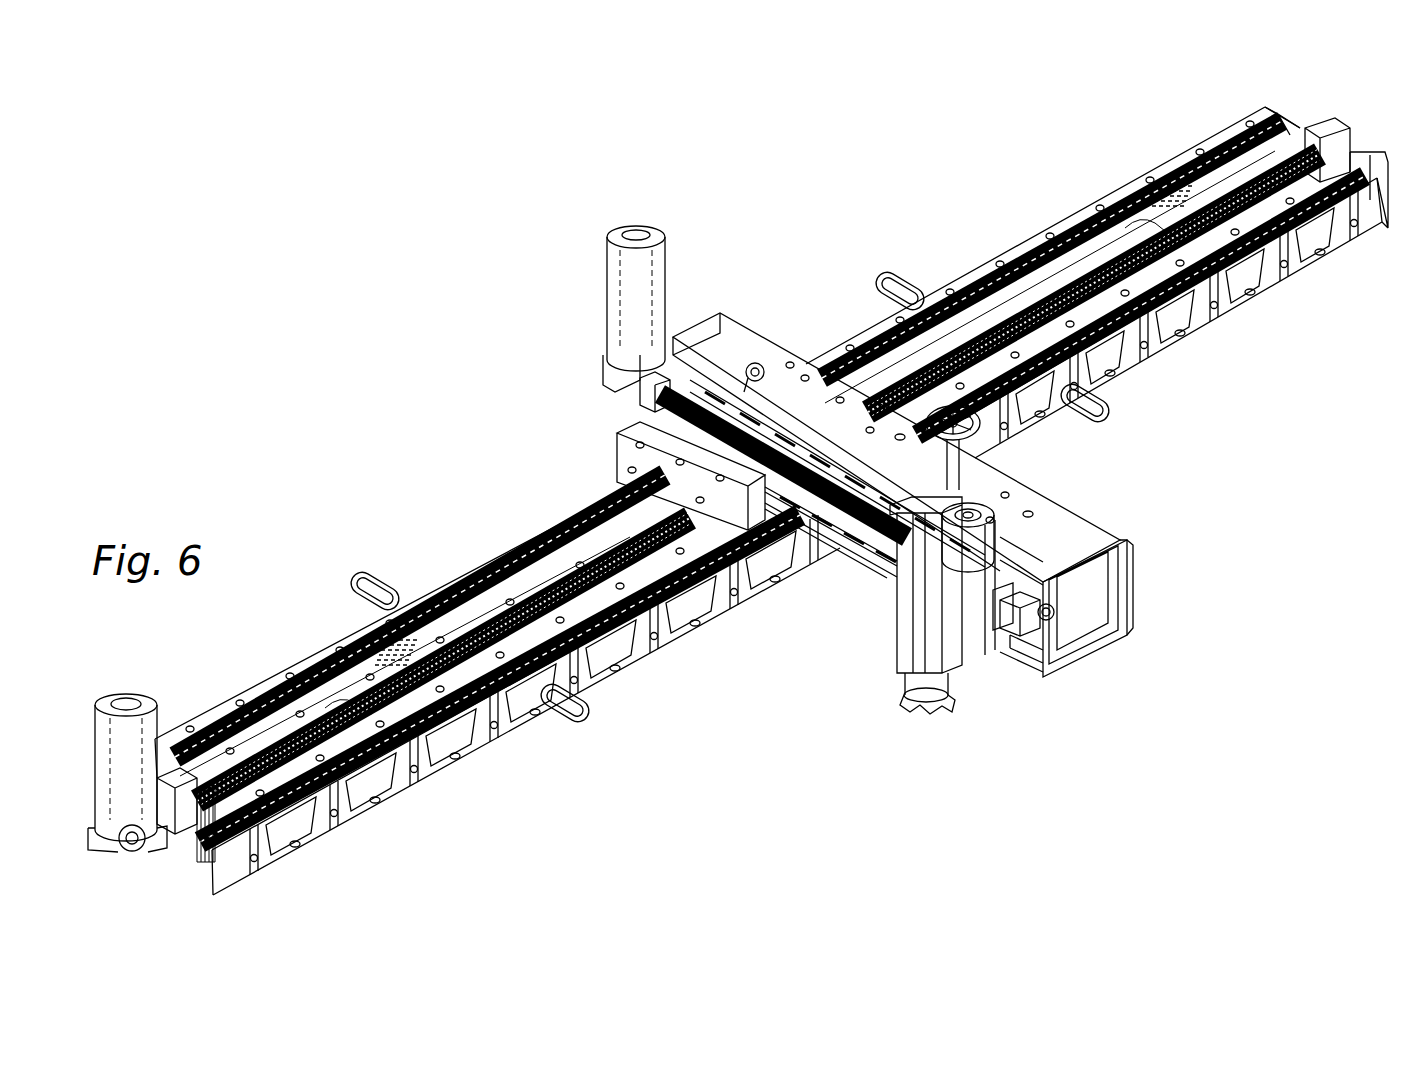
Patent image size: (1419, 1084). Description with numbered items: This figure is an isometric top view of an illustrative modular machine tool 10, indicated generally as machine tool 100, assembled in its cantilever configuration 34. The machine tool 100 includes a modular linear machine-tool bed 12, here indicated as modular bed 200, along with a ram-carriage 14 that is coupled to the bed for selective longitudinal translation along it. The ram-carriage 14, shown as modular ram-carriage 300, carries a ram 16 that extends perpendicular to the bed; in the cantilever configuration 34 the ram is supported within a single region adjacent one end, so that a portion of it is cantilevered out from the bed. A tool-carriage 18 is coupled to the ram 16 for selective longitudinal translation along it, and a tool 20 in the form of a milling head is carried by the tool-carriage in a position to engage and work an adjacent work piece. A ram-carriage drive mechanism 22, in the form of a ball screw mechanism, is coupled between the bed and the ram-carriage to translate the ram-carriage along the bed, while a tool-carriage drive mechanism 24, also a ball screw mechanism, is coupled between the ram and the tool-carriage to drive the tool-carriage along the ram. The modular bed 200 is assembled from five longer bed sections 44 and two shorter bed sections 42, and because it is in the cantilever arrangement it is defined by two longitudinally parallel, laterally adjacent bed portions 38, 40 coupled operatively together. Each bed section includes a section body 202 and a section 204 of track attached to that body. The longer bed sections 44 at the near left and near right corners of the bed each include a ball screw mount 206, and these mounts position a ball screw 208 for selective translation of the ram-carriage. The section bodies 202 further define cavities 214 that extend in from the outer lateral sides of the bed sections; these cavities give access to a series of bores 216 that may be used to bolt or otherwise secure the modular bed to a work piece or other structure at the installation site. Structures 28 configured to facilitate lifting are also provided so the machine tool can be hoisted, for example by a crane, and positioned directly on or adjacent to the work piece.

The machine tool 10 is at (404, 247).
The machine tool 100 is at (470, 259).
The cantilever configuration 34 is at (372, 418).
The modular linear machine-tool bed 12 is at (1196, 115).
The modular bed 200 is at (1150, 135).
The section body 202 is at (1199, 193).
The section of track 204 is at (1103, 206).
The ball screw mount 206 is at (1333, 139).
The ball screw 208 is at (476, 620).
The cavities 214 is at (1332, 239).
The bores 216 is at (1225, 319).
The bed portion 38 is at (1288, 123).
The bed portion 40 is at (1362, 154).
The shorter bed sections 42 is at (1133, 184).
The longer bed sections 44 is at (1003, 253).
The structures configured to facilitate lifting 28 is at (884, 277).
The ram 16 is at (760, 335).
The tool-carriage drive mechanism 24 is at (600, 367).
The ram-carriage 14 is at (616, 433).
The modular ram-carriage 300 is at (613, 445).
The tool 20 is at (893, 629).
The tool-carriage 18 is at (1014, 663).
The ram-carriage drive mechanism 22 is at (118, 847).